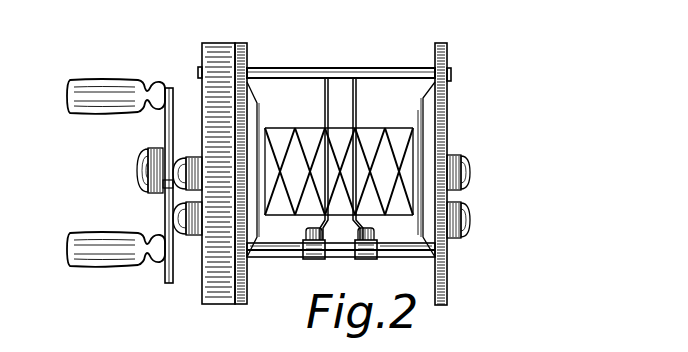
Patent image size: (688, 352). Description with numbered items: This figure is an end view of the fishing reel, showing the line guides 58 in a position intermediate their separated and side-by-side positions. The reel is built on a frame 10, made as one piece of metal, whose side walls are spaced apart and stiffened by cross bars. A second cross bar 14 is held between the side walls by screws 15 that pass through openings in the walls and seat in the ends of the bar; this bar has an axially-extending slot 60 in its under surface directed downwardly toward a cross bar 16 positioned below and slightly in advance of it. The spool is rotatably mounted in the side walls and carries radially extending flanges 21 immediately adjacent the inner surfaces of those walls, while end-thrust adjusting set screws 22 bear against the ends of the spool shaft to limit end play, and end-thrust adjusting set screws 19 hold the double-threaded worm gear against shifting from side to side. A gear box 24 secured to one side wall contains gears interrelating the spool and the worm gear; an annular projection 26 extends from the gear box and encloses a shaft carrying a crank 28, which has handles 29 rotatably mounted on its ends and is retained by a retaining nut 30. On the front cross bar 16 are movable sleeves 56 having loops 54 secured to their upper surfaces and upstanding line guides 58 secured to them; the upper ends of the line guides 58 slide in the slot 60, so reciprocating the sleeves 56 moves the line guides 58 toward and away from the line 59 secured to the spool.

The frame 10 is at (247, 55).
The second cross bar 14 is at (420, 68).
The screws 15 is at (198, 72).
The cross bar 16 is at (430, 248).
The end-thrust adjusting set screws 19 is at (183, 243).
The flanges 21 is at (420, 143).
The end-thrust adjusting set screws 22 is at (200, 157).
The gear box 24 is at (220, 45).
The annular projection 26 is at (177, 186).
The crank 28 is at (165, 133).
The handles 29 is at (107, 95).
The retaining nut 30 is at (137, 179).
The loops 54 is at (303, 248).
The movable sleeves 56 is at (307, 262).
The line guides 58 is at (328, 82).
The line 59 is at (390, 138).
The slot 60 is at (295, 80).